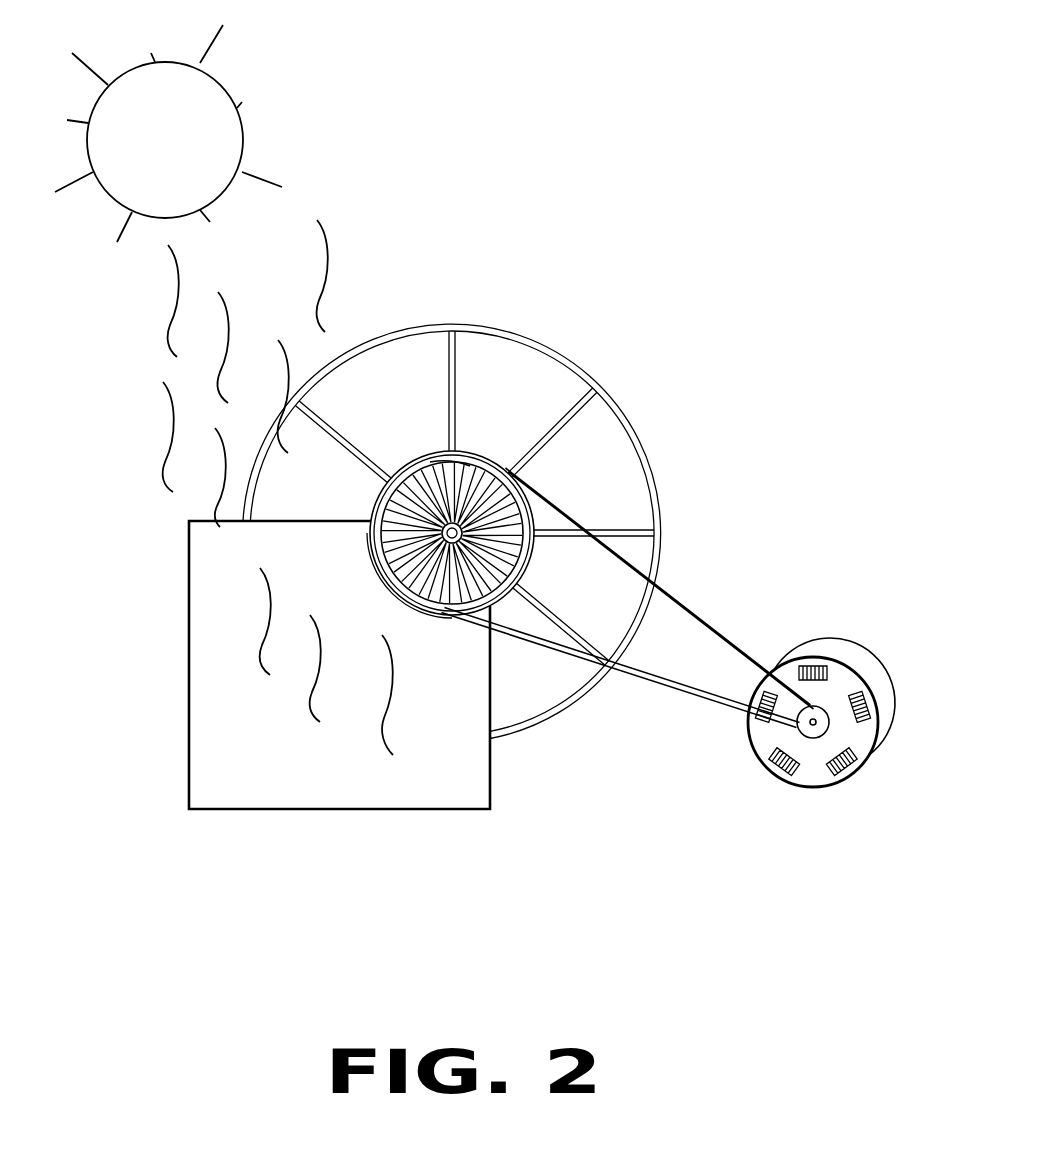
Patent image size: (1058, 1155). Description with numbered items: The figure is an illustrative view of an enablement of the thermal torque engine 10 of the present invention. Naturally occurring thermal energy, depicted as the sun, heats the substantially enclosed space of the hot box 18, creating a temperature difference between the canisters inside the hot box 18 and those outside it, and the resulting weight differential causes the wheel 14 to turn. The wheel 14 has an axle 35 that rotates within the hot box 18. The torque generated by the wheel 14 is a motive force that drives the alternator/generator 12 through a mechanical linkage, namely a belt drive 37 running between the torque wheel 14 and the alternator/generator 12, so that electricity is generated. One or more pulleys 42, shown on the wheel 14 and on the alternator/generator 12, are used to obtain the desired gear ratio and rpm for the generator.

The torque engine 10 is at (572, 257).
The alternator/generator 12 is at (837, 683).
The wheel 14 is at (495, 327).
The hot box 18 is at (265, 773).
The axle 35 is at (455, 527).
The belt drive 37 is at (700, 613).
The pulleys 42 is at (437, 462).